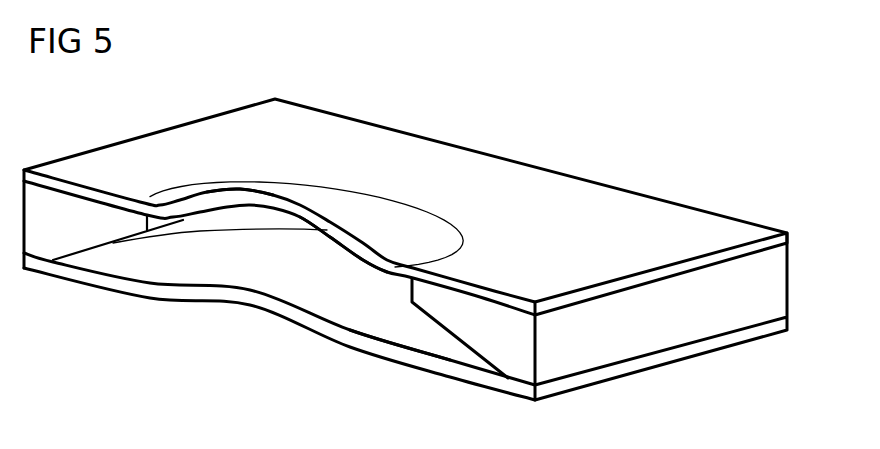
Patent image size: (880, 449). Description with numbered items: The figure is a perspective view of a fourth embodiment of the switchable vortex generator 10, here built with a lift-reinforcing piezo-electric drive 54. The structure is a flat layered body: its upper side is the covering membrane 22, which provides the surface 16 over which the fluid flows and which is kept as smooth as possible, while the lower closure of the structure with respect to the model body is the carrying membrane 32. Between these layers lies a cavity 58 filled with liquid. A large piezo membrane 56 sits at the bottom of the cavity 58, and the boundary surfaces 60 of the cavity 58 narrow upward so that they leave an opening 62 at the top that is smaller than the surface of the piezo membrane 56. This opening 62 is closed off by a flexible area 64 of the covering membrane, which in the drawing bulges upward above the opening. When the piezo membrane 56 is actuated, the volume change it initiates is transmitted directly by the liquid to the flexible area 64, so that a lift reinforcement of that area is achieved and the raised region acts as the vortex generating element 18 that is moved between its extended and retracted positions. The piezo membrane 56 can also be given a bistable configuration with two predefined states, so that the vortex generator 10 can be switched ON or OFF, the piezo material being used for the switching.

The vortex generator 10 is at (474, 109).
The surface 16 is at (611, 203).
The vortex generating element 18 is at (335, 180).
The covering membrane 22 is at (781, 240).
The carrying membrane 32 is at (617, 373).
The lift-reinforcing piezo-electric drive 54 is at (315, 354).
The piezo membrane 56 is at (412, 360).
The cavity 58 is at (237, 223).
The boundary surfaces 60 is at (495, 343).
The opening 62 is at (391, 293).
The flexible area of covering membrane 64 is at (253, 203).